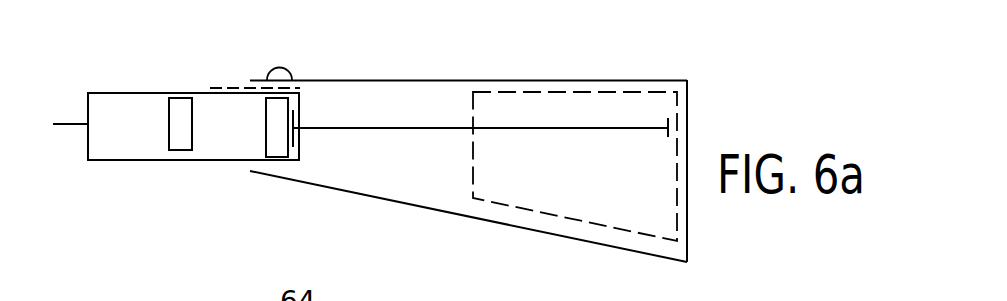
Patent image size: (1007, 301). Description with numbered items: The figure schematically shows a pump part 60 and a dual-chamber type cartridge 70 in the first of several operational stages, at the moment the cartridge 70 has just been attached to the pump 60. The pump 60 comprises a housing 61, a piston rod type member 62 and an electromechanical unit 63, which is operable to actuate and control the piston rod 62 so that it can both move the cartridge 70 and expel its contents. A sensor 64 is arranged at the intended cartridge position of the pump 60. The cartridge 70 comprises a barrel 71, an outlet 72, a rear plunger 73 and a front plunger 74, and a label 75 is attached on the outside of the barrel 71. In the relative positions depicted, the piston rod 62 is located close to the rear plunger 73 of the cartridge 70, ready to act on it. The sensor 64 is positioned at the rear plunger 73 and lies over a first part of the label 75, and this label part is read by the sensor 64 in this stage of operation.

The pump part 60 is at (468, 169).
The housing 61 is at (452, 212).
The piston rod type member 62 is at (402, 131).
The electromechanical unit 63 is at (600, 180).
The sensor 64 is at (292, 78).
The dual-chamber type cartridge 70 is at (167, 133).
The barrel 71 is at (225, 160).
The outlet 72 is at (72, 127).
The rear plunger 73 is at (276, 113).
The front plunger 74 is at (180, 128).
The label 75 is at (230, 87).